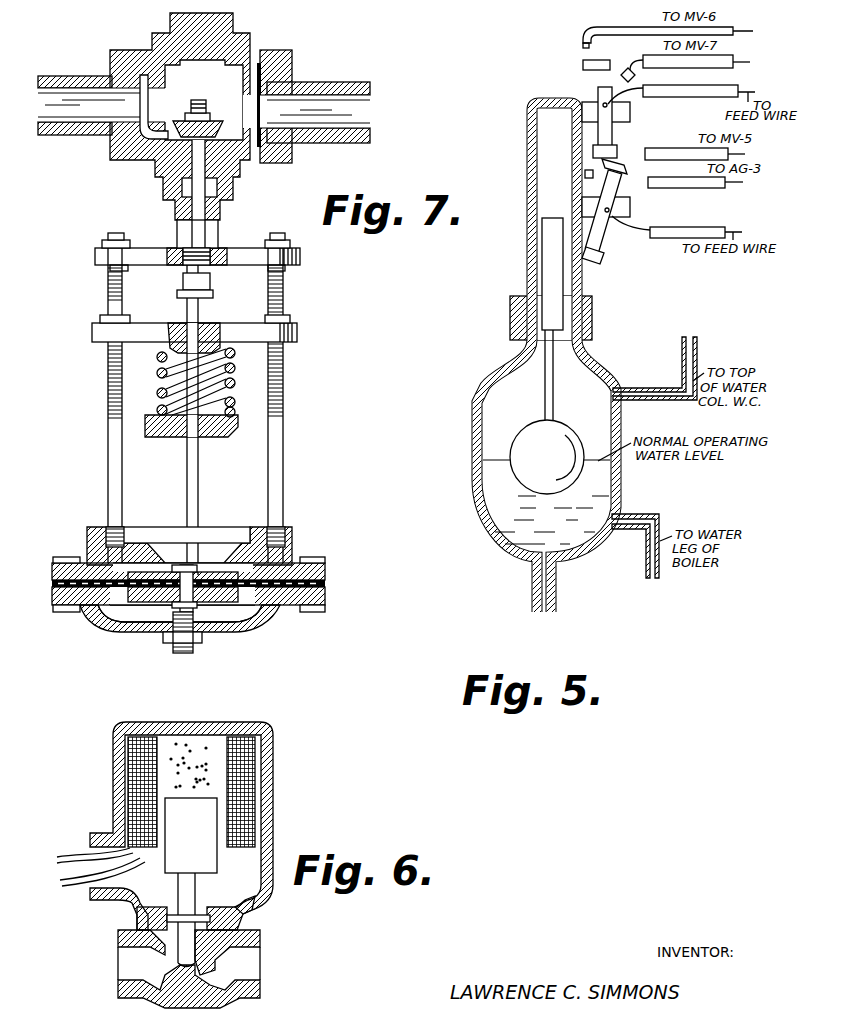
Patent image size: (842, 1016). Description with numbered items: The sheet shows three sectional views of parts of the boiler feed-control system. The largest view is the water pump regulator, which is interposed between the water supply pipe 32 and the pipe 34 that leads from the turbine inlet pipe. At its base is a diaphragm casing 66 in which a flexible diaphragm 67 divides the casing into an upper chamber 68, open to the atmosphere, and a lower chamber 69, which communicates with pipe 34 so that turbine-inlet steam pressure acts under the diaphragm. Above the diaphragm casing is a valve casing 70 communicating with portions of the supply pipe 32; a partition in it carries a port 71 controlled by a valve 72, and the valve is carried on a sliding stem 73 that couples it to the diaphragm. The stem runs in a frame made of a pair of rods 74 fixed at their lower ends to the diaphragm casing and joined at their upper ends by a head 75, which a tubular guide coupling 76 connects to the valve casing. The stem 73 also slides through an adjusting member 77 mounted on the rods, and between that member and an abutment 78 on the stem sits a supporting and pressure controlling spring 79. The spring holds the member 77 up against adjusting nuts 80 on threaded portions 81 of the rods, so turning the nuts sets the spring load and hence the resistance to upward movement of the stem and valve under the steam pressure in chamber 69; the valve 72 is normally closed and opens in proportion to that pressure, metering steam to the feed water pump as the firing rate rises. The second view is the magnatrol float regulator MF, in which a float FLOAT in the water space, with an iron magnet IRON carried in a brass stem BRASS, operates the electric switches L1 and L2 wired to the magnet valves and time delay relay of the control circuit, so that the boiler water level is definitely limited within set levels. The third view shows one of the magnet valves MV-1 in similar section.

In FIG. 7, the water supply pipe 32 is at (86, 76).
In FIG. 7, the valve casing 70 is at (279, 60).
In FIG. 7, the port 71 is at (150, 110).
In FIG. 7, the valve 72 is at (240, 108).
In FIG. 7, the sliding stem 73 is at (200, 317).
In FIG. 7, the rods 74 is at (108, 468).
In FIG. 7, the head 75 is at (243, 247).
In FIG. 7, the tubular guide coupling 76 is at (178, 233).
In FIG. 7, the adjusting member 77 is at (95, 335).
In FIG. 7, the abutment 78 is at (172, 440).
In FIG. 7, the supporting and pressure controlling spring 79 is at (234, 385).
In FIG. 7, the adjusting nuts 80 is at (100, 317).
In FIG. 7, the threaded portions 81 is at (108, 400).
In FIG. 7, the diaphragm casing 66 is at (58, 558).
In FIG. 7, the flexible diaphragm 67 is at (106, 616).
In FIG. 7, the upper chamber 68 is at (209, 568).
In FIG. 7, the lower chamber 69 is at (241, 607).
In FIG. 7, the pipe 34 is at (173, 647).
In FIG. 6, the magnet valve MV-1 is at (278, 803).
In FIG. 5, the magnatrol float boiler water regulator MF is at (599, 364).
In FIG. 5, the brass fitting BRASS is at (527, 326).
In FIG. 5, the electric switch L1 is at (628, 118).
In FIG. 5, the electric switch L2 is at (629, 200).
In FIG. 5, the iron magnet IRON is at (556, 286).
In FIG. 5, the float FLOAT is at (523, 452).